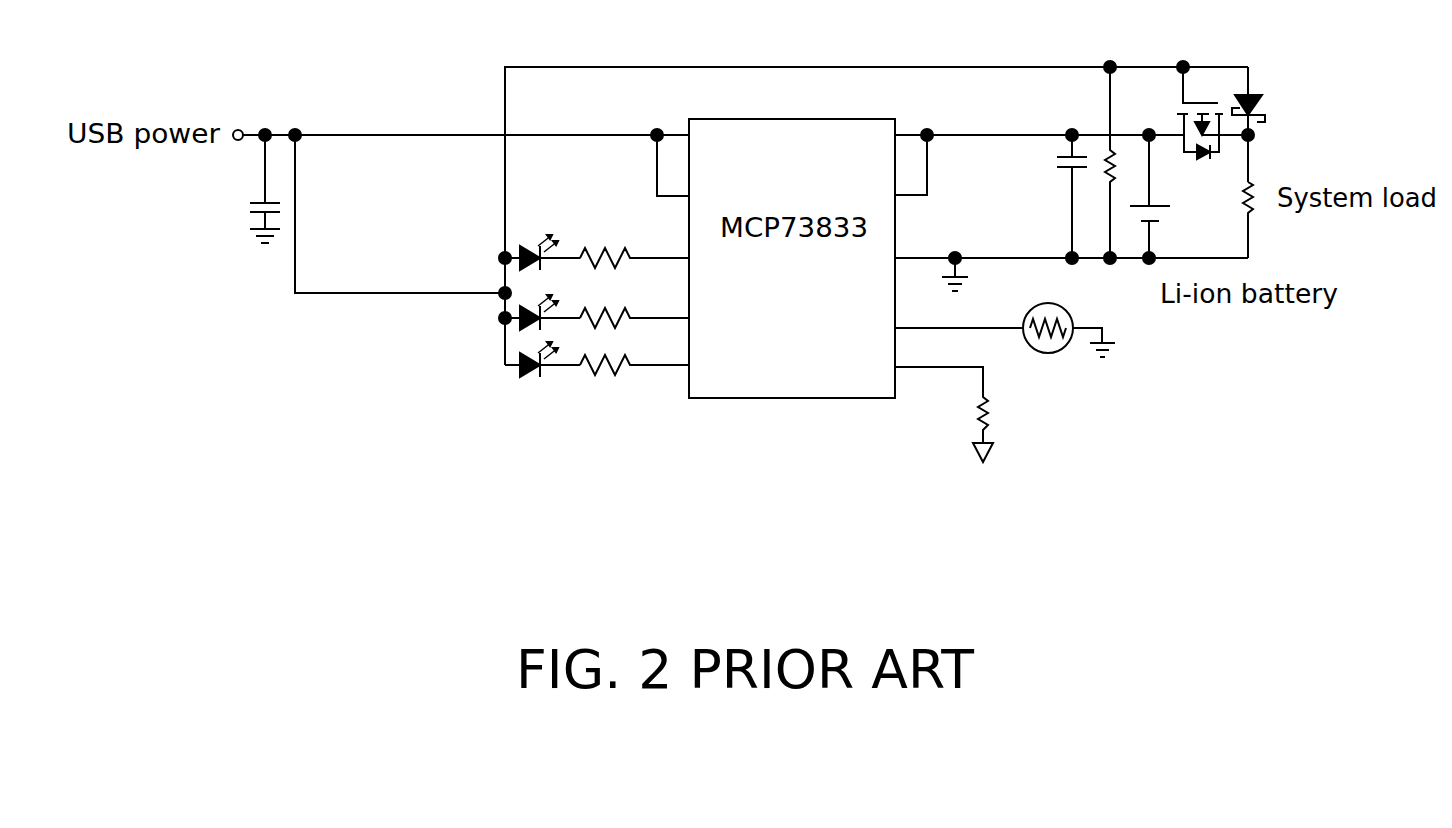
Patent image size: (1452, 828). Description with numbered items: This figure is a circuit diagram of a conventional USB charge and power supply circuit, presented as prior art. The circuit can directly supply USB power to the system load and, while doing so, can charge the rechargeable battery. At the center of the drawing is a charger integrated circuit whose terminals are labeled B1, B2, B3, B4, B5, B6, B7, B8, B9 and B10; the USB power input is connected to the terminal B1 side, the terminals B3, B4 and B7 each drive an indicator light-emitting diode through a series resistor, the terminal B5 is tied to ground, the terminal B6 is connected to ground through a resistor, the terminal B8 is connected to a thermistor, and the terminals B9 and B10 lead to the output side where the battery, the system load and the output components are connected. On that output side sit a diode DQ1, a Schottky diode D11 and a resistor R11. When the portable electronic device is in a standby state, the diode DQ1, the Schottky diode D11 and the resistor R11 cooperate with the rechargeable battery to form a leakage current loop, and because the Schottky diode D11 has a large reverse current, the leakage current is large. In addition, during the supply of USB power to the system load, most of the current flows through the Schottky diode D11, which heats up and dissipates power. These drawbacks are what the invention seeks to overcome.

The resistor R11 is at (1112, 148).
The Schottky diode D11 is at (1282, 124).
The diode DQ1 is at (1212, 132).
The charger IC pin B1 is at (662, 122).
The charger IC pin B2 is at (650, 165).
The charger IC pin B3 with LED indicator B3 is at (594, 247).
The charger IC pin B4 with LED indicator B4 is at (594, 307).
The charger IC pin B5 ground B5 is at (1071, 257).
The charger IC pin B6 programming resistor B6 is at (944, 397).
The charger IC pin B7 with LED indicator B7 is at (597, 354).
The charger IC pin B8 thermistor B8 is at (1005, 325).
The charger IC pin B9 is at (933, 165).
The charger IC pin B10 output B10 is at (931, 120).